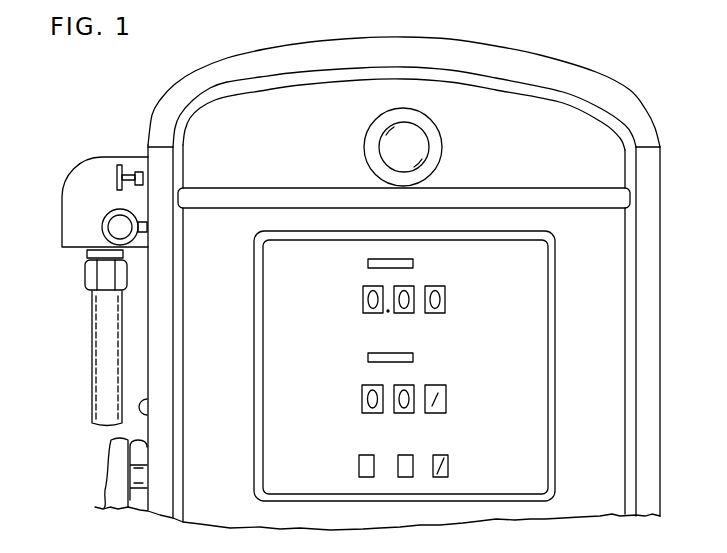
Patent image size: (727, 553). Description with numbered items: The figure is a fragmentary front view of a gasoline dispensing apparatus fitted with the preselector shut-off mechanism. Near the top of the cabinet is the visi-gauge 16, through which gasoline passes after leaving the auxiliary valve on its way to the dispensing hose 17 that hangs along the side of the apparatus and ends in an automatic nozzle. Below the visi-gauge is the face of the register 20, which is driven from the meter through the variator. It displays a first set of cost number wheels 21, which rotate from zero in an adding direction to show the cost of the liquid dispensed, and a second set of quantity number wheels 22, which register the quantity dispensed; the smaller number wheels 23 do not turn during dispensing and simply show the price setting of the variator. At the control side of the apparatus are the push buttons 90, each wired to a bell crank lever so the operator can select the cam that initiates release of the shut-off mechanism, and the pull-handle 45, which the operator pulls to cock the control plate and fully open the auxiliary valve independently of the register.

The visi-gauge 16 is at (388, 132).
The dispensing hose 17 is at (100, 336).
The register 20 is at (452, 291).
The cost number wheels 21 is at (376, 308).
The quantity number wheels 22 is at (364, 388).
The smaller number wheels 23 is at (358, 457).
The pull-handle 45 is at (102, 228).
The push buttons 90 is at (118, 168).